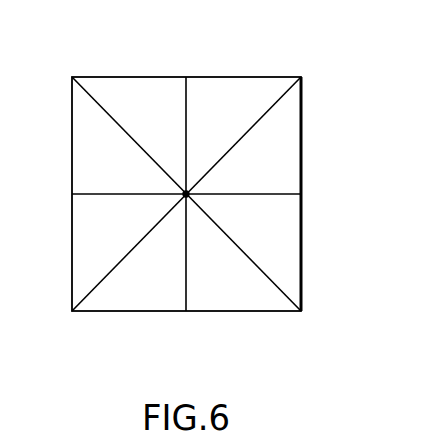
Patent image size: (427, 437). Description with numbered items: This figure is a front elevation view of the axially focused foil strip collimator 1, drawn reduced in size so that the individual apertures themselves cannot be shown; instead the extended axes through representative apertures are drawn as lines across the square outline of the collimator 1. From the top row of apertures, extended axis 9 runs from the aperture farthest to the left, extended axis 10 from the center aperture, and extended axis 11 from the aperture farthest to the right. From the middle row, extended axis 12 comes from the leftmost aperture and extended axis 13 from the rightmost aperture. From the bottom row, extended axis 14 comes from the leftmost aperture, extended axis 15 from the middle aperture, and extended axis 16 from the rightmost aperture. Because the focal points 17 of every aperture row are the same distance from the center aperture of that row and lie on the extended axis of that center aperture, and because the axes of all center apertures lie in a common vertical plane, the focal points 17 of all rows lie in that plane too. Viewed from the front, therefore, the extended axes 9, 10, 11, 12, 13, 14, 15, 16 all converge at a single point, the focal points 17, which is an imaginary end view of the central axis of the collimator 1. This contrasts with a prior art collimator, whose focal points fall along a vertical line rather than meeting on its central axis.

The axially focused foil strip collimator 1 is at (282, 78).
The extended axis 9 is at (113, 119).
The extended axis 10 is at (186, 162).
The extended axis 11 is at (265, 113).
The extended axis 12 is at (100, 194).
The extended axis 13 is at (275, 195).
The extended axis 14 is at (111, 271).
The extended axis 15 is at (187, 270).
The extended axis 16 is at (265, 272).
The focal points 17 is at (186, 194).